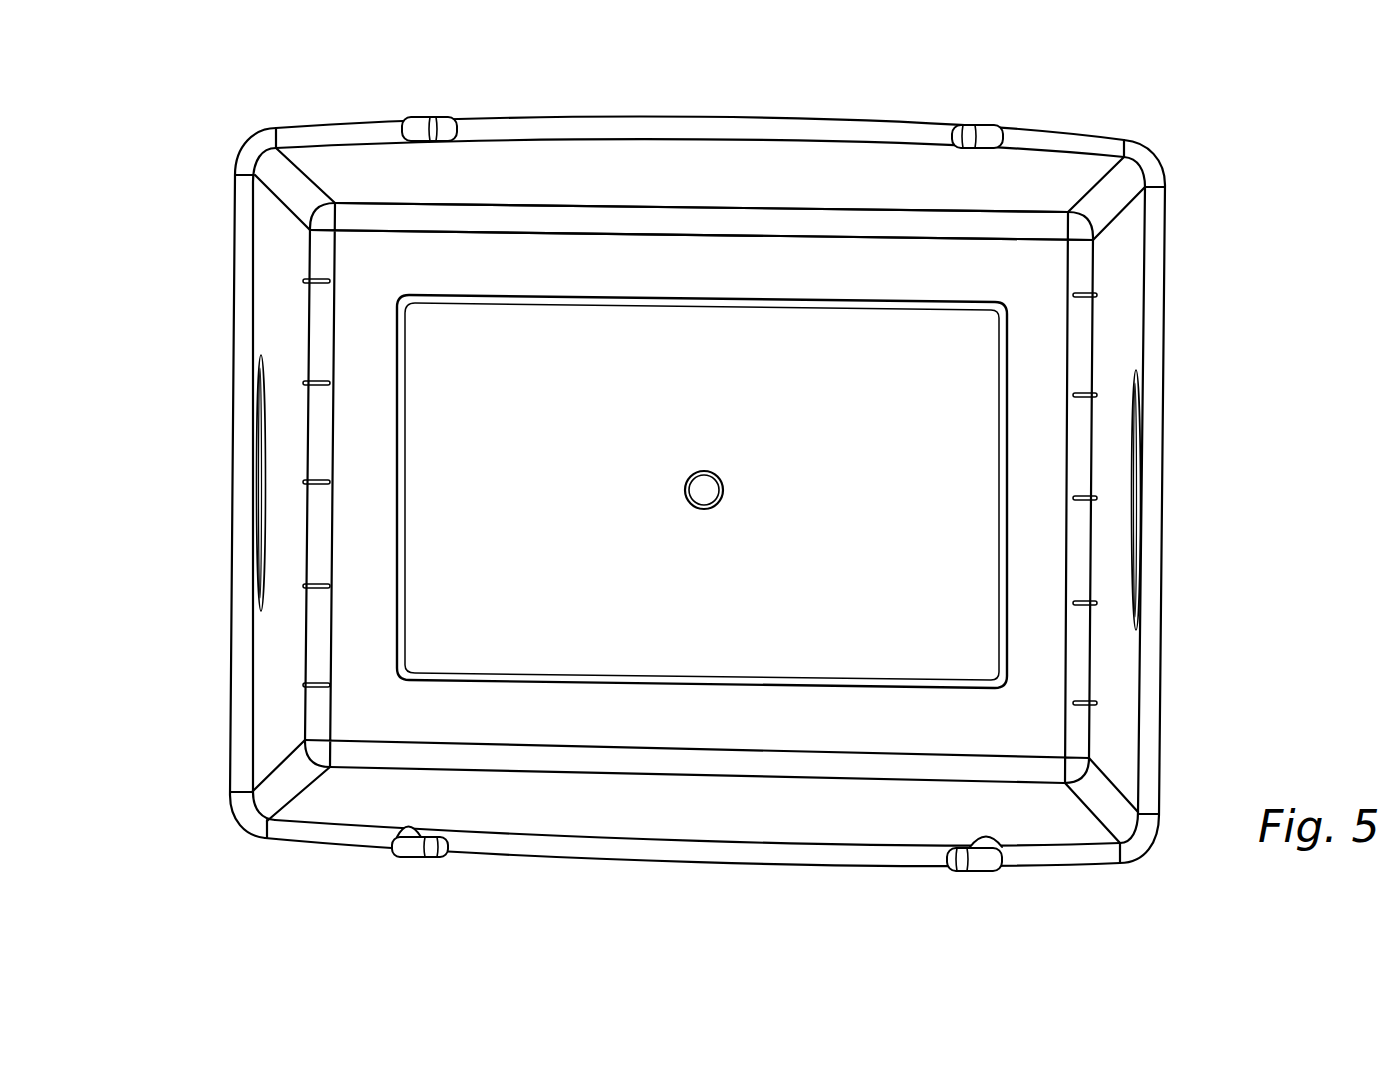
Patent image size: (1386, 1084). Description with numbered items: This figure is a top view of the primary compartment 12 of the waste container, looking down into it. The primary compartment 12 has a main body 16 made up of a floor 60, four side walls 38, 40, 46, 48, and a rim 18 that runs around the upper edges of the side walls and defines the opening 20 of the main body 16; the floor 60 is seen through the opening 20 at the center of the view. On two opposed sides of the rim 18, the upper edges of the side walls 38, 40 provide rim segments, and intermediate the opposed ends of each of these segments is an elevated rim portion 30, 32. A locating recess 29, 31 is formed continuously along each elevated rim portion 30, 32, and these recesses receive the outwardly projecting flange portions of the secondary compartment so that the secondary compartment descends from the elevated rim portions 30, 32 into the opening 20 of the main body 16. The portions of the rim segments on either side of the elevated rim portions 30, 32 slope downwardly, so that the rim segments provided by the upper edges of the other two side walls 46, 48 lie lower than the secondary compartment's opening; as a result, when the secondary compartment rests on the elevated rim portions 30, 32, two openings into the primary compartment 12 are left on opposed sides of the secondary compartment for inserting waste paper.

The primary compartment 12 is at (1290, 691).
The main body 16 is at (1166, 178).
The rim 18 is at (1122, 138).
The opening 20 is at (1040, 449).
The locating recess 29 is at (567, 120).
The elevated rim portion 30 is at (443, 122).
The locating recess 31 is at (843, 860).
The elevated rim portion 32 is at (400, 828).
The side wall 38 is at (664, 158).
The side wall 40 is at (613, 822).
The side wall 46 is at (281, 333).
The side wall 48 is at (1135, 325).
The floor 60 is at (420, 565).